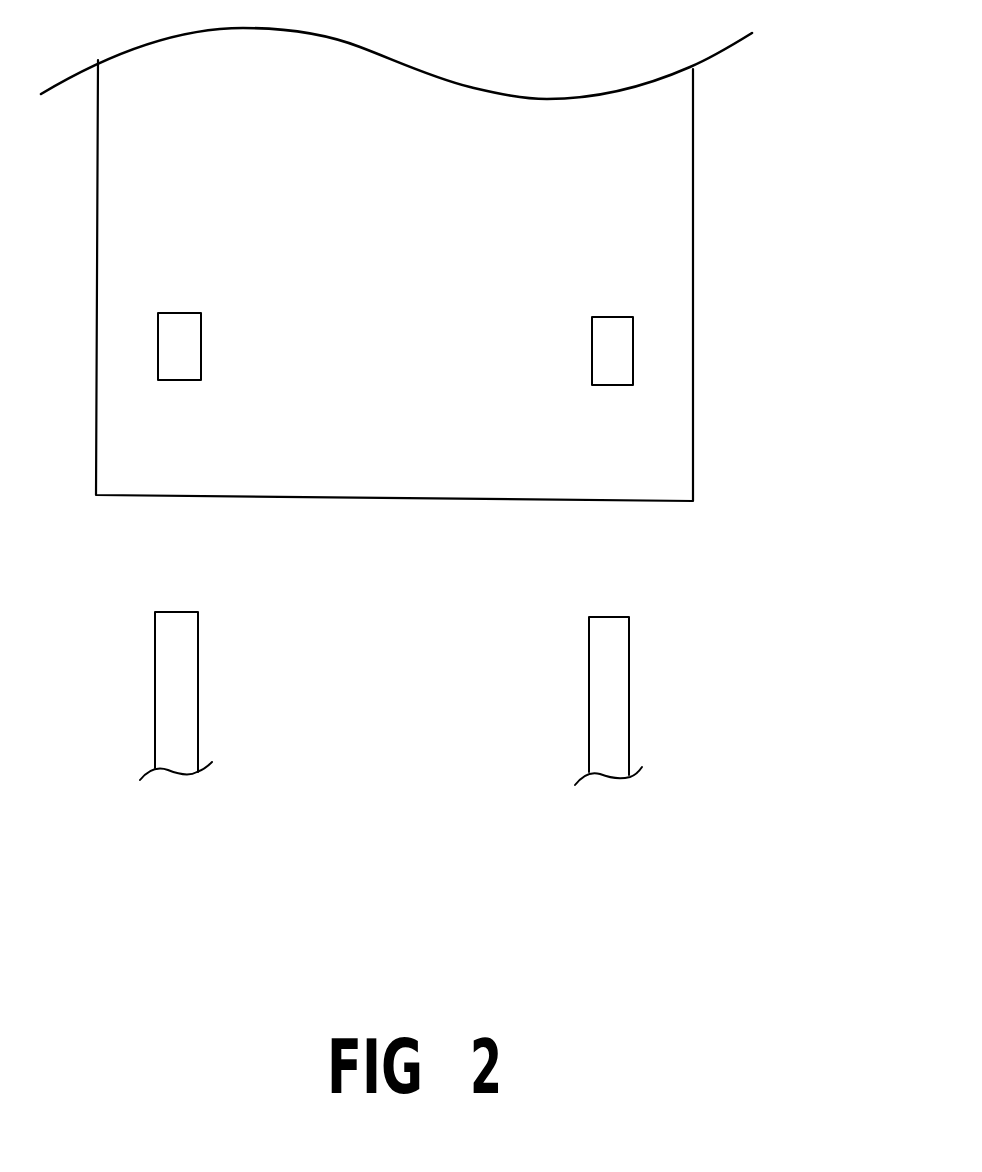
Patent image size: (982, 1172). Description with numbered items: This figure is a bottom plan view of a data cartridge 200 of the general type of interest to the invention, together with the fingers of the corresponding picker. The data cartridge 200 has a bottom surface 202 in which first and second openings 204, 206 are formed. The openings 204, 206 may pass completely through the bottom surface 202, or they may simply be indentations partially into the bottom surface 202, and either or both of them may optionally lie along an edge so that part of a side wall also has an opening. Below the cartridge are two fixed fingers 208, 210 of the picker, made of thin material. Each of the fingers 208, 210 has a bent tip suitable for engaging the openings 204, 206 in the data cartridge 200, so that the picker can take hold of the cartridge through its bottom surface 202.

The data cartridge 200 is at (694, 289).
The bottom surface 202 is at (375, 120).
The first opening 204 is at (202, 345).
The second opening 206 is at (592, 348).
The first fixed finger 208 is at (198, 695).
The second fixed finger 210 is at (630, 697).